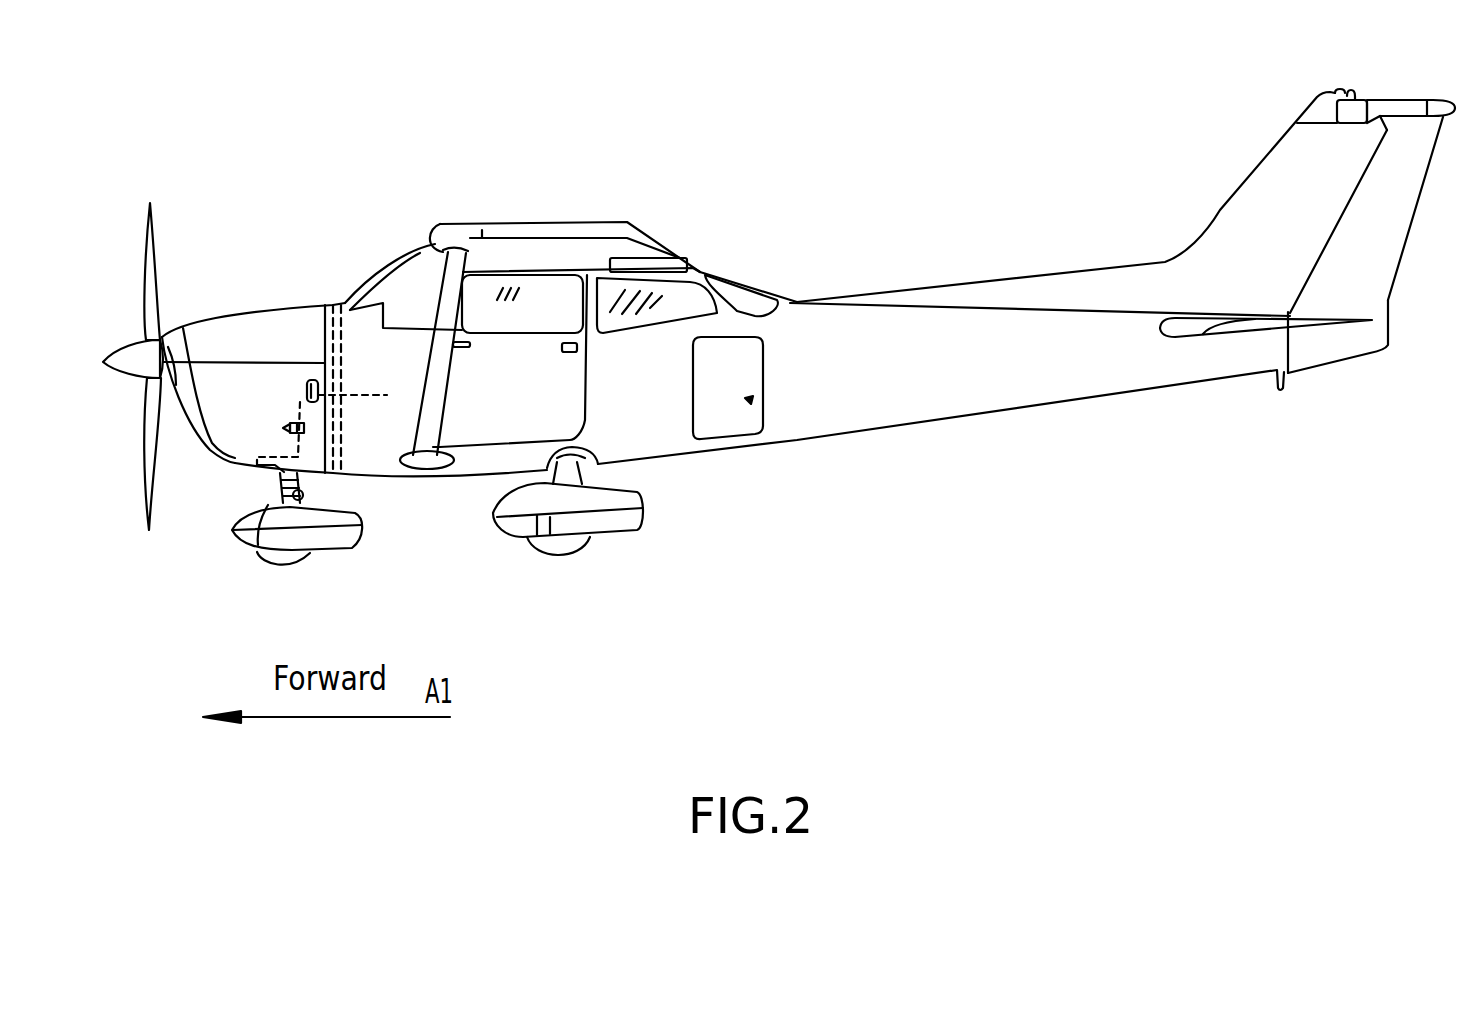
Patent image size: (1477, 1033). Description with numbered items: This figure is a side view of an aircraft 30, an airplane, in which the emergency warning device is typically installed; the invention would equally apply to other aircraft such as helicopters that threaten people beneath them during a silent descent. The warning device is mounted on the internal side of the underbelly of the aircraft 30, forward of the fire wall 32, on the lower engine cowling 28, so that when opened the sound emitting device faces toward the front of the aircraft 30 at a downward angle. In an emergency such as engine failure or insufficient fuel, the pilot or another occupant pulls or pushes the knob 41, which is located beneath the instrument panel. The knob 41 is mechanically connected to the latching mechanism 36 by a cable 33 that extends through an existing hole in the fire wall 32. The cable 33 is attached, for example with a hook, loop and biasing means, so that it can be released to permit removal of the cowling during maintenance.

The lower engine cowling 28 is at (234, 462).
The aircraft 30 is at (924, 421).
The fire wall 32 is at (339, 438).
The cable 33 is at (302, 397).
The latching mechanism 36 is at (262, 550).
The knob 41 is at (387, 394).